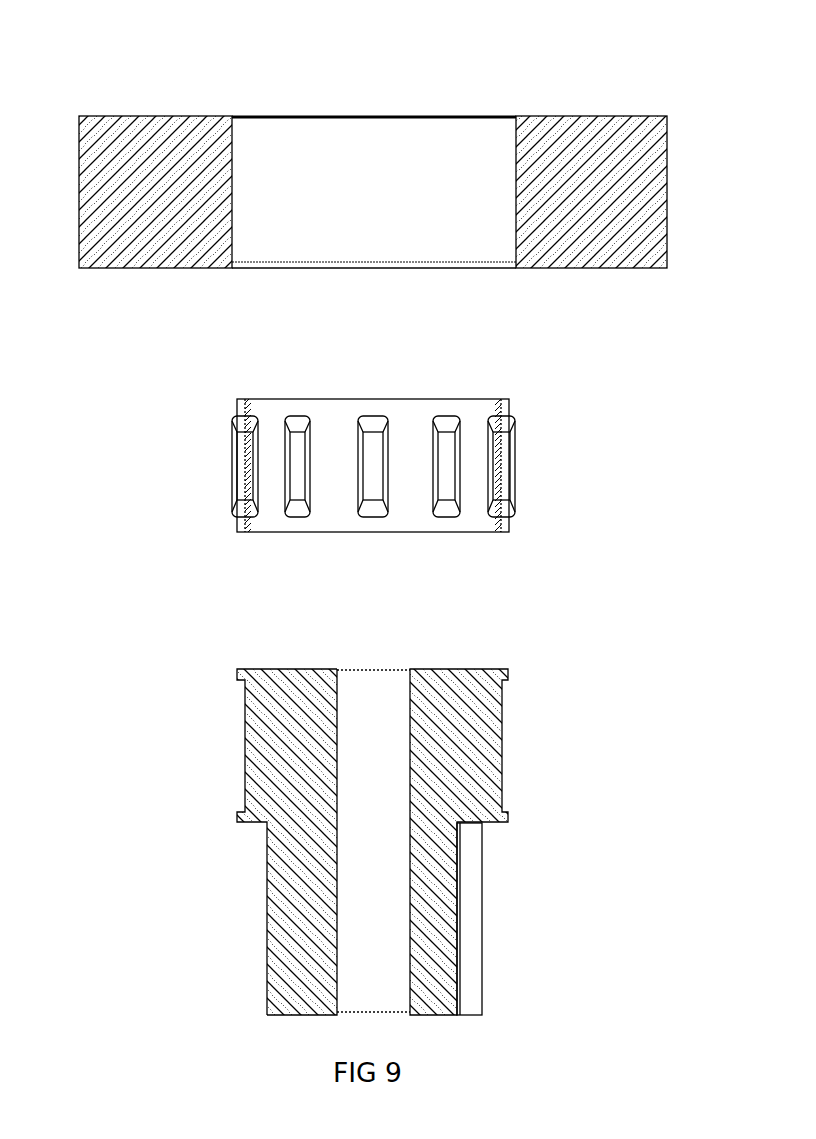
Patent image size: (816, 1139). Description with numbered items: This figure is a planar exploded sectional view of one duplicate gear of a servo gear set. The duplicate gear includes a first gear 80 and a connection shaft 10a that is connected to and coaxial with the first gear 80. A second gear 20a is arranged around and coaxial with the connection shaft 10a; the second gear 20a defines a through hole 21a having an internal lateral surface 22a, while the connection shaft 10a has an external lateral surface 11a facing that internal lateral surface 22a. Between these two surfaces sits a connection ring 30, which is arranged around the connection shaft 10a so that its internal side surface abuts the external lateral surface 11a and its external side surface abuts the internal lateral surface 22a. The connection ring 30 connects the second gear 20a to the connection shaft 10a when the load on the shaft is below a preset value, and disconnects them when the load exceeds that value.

The second gear 20a is at (156, 209).
The through hole 21a is at (323, 182).
The internal lateral surface 22a is at (515, 188).
The connection ring 30 is at (473, 448).
The connection shaft 10a is at (473, 750).
The external lateral surface 11a is at (243, 745).
The first gear 80 is at (440, 948).